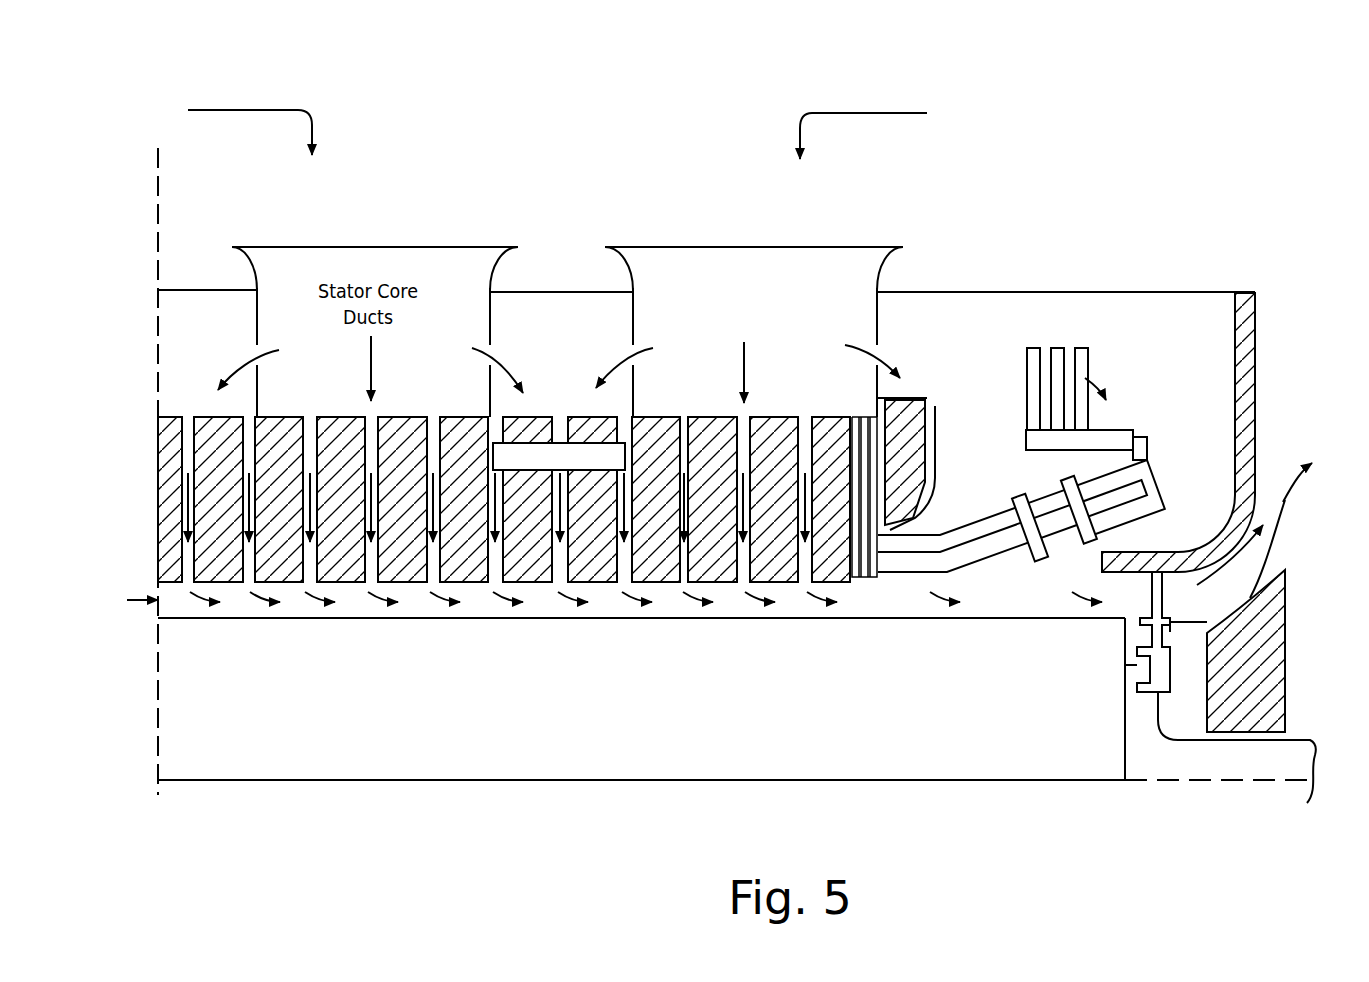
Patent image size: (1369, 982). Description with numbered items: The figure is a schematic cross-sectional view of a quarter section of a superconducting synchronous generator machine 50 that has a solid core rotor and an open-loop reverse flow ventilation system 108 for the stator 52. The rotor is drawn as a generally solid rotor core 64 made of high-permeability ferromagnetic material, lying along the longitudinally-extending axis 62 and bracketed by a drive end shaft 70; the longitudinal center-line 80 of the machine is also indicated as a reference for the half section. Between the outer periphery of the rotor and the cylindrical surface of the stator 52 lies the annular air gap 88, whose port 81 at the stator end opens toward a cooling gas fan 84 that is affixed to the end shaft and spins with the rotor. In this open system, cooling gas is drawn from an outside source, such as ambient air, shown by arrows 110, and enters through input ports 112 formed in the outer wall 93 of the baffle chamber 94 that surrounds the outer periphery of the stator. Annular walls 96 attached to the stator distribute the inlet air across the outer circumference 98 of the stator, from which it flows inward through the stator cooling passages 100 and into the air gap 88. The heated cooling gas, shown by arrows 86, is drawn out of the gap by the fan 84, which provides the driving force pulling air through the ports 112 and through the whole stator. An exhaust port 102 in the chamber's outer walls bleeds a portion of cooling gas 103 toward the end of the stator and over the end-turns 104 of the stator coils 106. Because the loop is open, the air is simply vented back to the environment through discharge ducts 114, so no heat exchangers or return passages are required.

The synchronous generator machine 50 is at (1098, 830).
The stator 52 is at (163, 498).
The longitudinally-extending axis 62 is at (975, 780).
The solid rotor core 64 is at (738, 702).
The drive end shaft 70 is at (1277, 773).
The longitudinal center-line 80 is at (158, 716).
The port 81 is at (860, 598).
The cooling gas fan 84 is at (1160, 672).
The heated cooling gas arrows 86 is at (745, 368).
The annular air gap 88 is at (127, 600).
The outer wall 93 is at (172, 290).
The baffle chamber 94 is at (557, 345).
The annular walls 96 is at (257, 324).
The outer circumference of the stator 98 is at (158, 415).
The stator cooling passages 100 is at (192, 417).
The exhaust port 102 is at (880, 350).
The bled cooling gas 103 is at (912, 383).
The end-turns 104 is at (1148, 488).
The stator coils 106 is at (915, 542).
The open-loop reverse flow ventilation system 108 is at (1015, 248).
The ambient air arrows 110 is at (258, 112).
The input port 112 is at (293, 247).
The discharge ducts 114 is at (1270, 490).